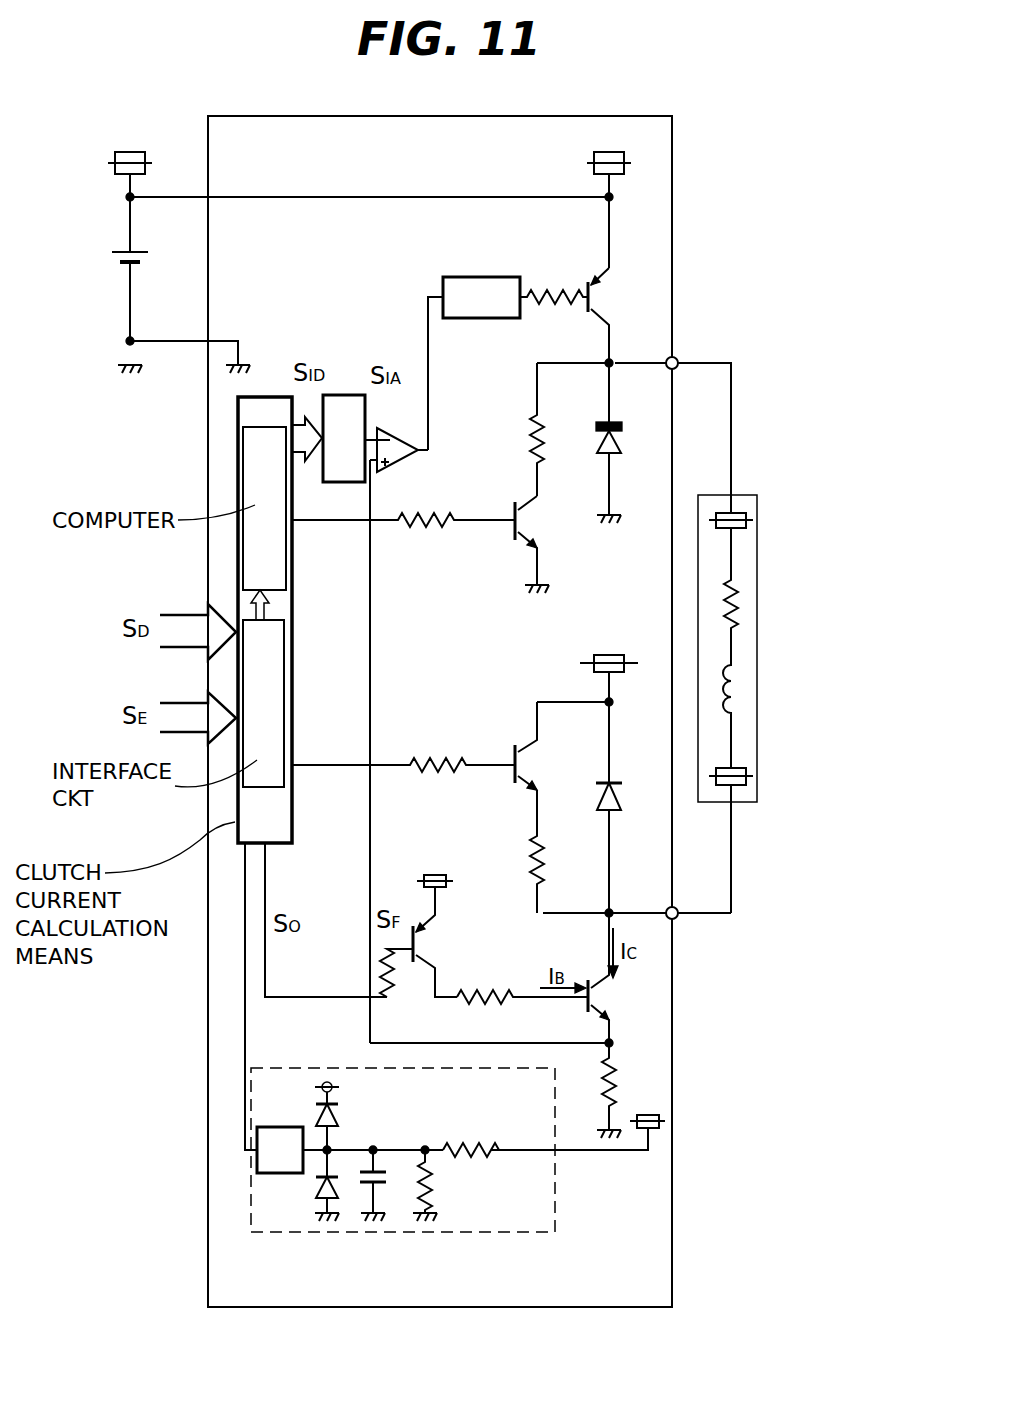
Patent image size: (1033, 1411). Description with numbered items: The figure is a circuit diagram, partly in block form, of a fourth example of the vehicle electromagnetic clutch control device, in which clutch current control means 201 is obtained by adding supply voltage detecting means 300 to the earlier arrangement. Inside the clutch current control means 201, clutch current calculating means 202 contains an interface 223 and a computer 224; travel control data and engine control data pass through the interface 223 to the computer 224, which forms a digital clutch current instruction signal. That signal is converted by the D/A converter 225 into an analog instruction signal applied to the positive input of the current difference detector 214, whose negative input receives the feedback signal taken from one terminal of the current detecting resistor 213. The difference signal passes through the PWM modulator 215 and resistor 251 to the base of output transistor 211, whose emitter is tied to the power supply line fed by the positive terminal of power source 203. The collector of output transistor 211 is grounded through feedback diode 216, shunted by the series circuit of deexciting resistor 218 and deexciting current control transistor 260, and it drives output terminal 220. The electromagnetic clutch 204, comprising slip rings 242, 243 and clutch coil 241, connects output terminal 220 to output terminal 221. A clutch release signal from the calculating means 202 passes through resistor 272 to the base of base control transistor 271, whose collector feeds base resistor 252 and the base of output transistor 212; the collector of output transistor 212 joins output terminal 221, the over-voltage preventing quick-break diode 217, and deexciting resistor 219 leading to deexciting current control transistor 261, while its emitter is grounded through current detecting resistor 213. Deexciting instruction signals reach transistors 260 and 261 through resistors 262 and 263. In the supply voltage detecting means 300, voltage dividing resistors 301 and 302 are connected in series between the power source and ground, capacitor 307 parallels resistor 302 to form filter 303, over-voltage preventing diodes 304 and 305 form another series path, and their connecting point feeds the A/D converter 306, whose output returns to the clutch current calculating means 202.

The clutch current control means 201 is at (580, 116).
The clutch current calculating means 202 is at (266, 395).
The power source 203 is at (114, 254).
The electromagnetic clutch 204 is at (748, 495).
The output transistor 211 is at (602, 300).
The output transistor 212 is at (603, 1000).
The current detecting resistor 213 is at (616, 1084).
The current difference detector 214 is at (410, 466).
The PWM modulator 215 is at (467, 276).
The feedback diode 216 is at (618, 448).
The over-voltage preventing quick-break diode 217 is at (620, 802).
The deexciting resistor 218 is at (532, 438).
The deexciting resistor 219 is at (530, 858).
The output terminal 220 is at (676, 356).
The output terminal 221 is at (676, 919).
The interface 223 is at (286, 790).
The computer 224 is at (290, 596).
The D/A converter 225 is at (350, 393).
The clutch coil 241 is at (698, 680).
The slip ring 242 is at (720, 788).
The slip ring 243 is at (722, 512).
The resistor 251 is at (550, 284).
The base resistor 252 is at (487, 992).
The deexciting current control transistor 260 is at (522, 546).
The deexciting current control transistor 261 is at (525, 782).
The resistor 262 is at (415, 530).
The resistor 263 is at (418, 778).
The base control transistor 271 is at (428, 940).
The resistor 272 is at (395, 990).
The supply voltage detecting means 300 is at (550, 1232).
The voltage dividing resistor 301 is at (470, 1142).
The voltage dividing resistor 302 is at (435, 1182).
The filter 303 is at (393, 1204).
The over-voltage preventing diode 304 is at (340, 1110).
The over-voltage preventing diode 305 is at (317, 1190).
The A/D converter 306 is at (280, 1126).
The capacitor 307 is at (358, 1182).